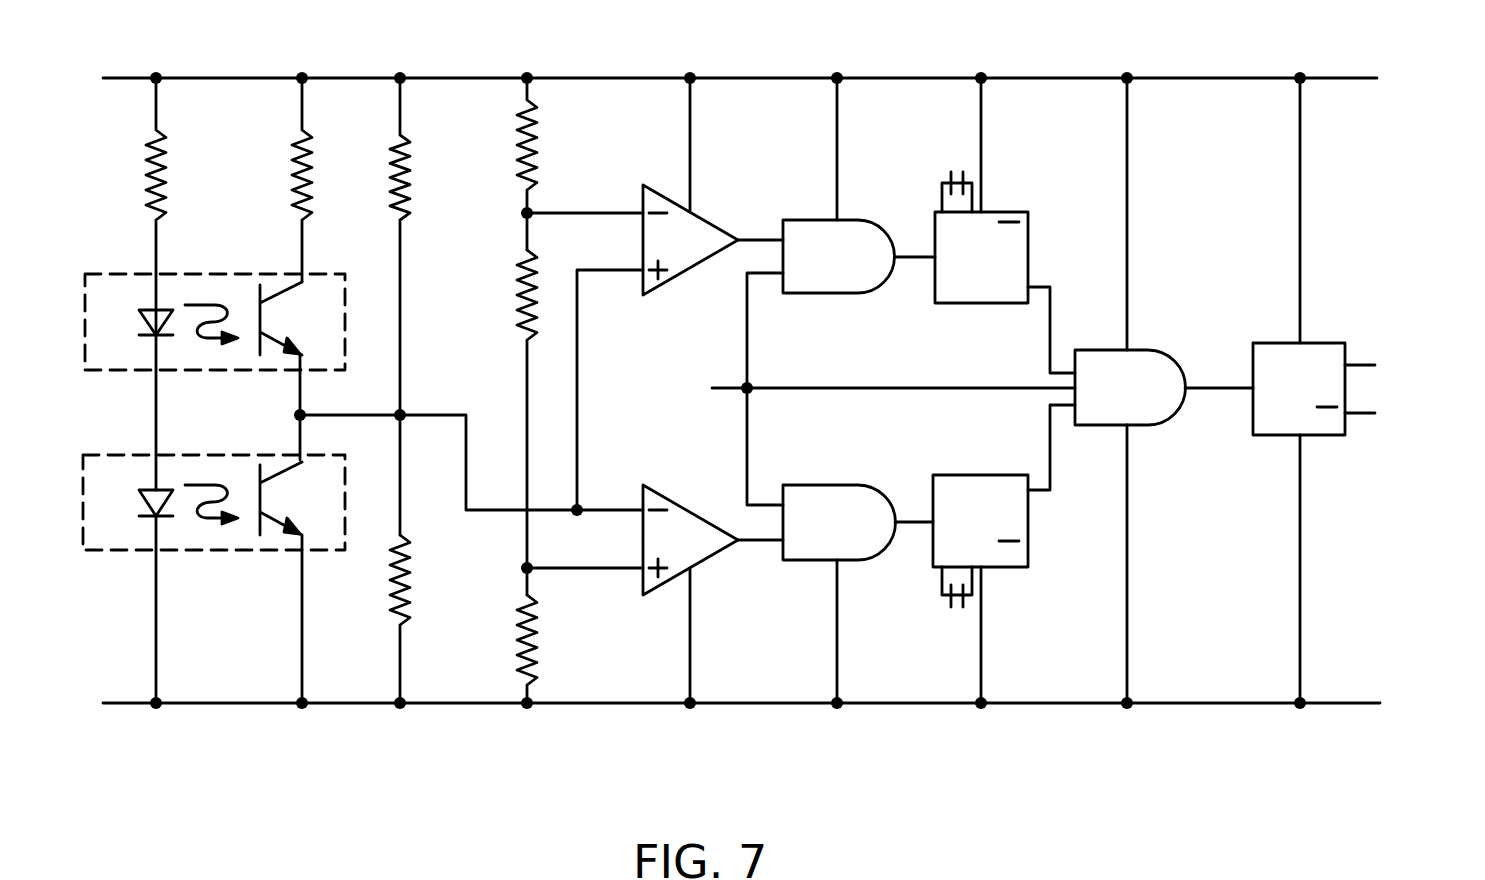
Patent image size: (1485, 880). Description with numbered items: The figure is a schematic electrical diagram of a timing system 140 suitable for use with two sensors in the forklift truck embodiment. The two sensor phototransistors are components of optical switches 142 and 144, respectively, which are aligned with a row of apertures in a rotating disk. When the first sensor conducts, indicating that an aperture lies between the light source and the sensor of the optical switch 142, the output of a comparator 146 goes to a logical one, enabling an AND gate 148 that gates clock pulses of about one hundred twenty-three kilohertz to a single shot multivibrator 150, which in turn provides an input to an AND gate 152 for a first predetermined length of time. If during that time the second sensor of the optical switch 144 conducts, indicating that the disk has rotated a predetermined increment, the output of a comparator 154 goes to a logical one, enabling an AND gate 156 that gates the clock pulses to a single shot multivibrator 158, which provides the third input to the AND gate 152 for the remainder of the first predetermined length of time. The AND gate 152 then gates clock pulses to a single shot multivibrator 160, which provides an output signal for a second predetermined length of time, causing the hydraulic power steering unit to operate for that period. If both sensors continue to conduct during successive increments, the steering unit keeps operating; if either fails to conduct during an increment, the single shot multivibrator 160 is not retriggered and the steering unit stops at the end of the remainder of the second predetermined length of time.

The timing system 140 is at (448, 775).
The optical switch 142 is at (122, 263).
The optical switch 144 is at (125, 535).
The comparator 146 is at (697, 230).
The AND gate 148 is at (862, 233).
The single shot multivibrator 150 is at (950, 283).
The AND gate 152 is at (1162, 380).
The comparator 154 is at (703, 547).
The AND gate 156 is at (855, 545).
The single shot multivibrator 158 is at (945, 490).
The single shot multivibrator 160 is at (1268, 405).